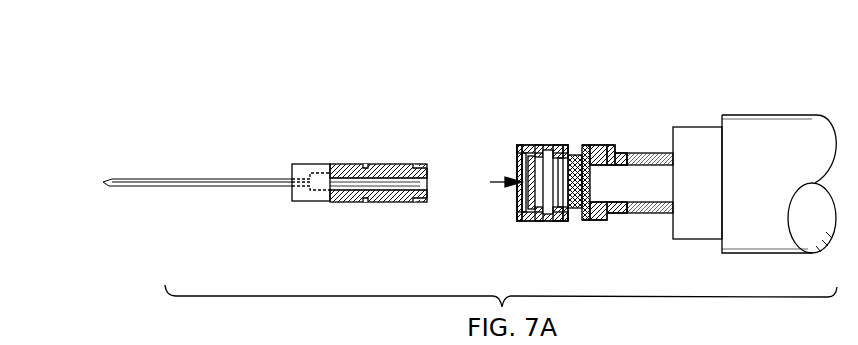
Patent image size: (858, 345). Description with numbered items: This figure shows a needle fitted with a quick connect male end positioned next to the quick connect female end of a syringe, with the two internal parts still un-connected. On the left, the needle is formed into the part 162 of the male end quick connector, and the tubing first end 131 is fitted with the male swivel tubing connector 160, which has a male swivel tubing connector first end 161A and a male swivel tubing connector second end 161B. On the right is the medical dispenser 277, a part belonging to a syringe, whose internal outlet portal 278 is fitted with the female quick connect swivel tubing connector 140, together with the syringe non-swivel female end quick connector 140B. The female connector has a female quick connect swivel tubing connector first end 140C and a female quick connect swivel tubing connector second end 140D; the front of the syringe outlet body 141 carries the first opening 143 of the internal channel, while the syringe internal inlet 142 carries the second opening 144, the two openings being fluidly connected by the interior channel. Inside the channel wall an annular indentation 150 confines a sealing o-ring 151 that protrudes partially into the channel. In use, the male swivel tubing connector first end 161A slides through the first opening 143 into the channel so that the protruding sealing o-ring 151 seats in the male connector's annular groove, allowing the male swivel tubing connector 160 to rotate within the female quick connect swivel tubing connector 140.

The tubing first end 131 is at (264, 178).
The male swivel tubing connector 160 is at (318, 166).
The part of male end quick connector that syringe needle is made into 162 is at (290, 197).
The male swivel tubing connector second end 161B is at (290, 202).
The male swivel tubing connector first end 161A is at (427, 197).
The annular indentation 150 is at (515, 215).
The female quick connect swivel tubing connector first end 140C is at (518, 150).
The front of syringe outlet body 141 is at (519, 147).
The first opening of internal channel 143 is at (517, 168).
The syringe non-swivel female end quick connector 140B is at (543, 147).
The sealing o-ring 151 is at (540, 222).
The female quick connect swivel tubing connector 140 is at (553, 147).
The second opening of internal channel 144 is at (598, 220).
The internal outlet portal 278 is at (612, 148).
The female quick connect swivel tubing connector second end 140D is at (623, 215).
The syringe internal inlet 142 is at (635, 212).
The part belonging to a syringe 277 is at (745, 115).